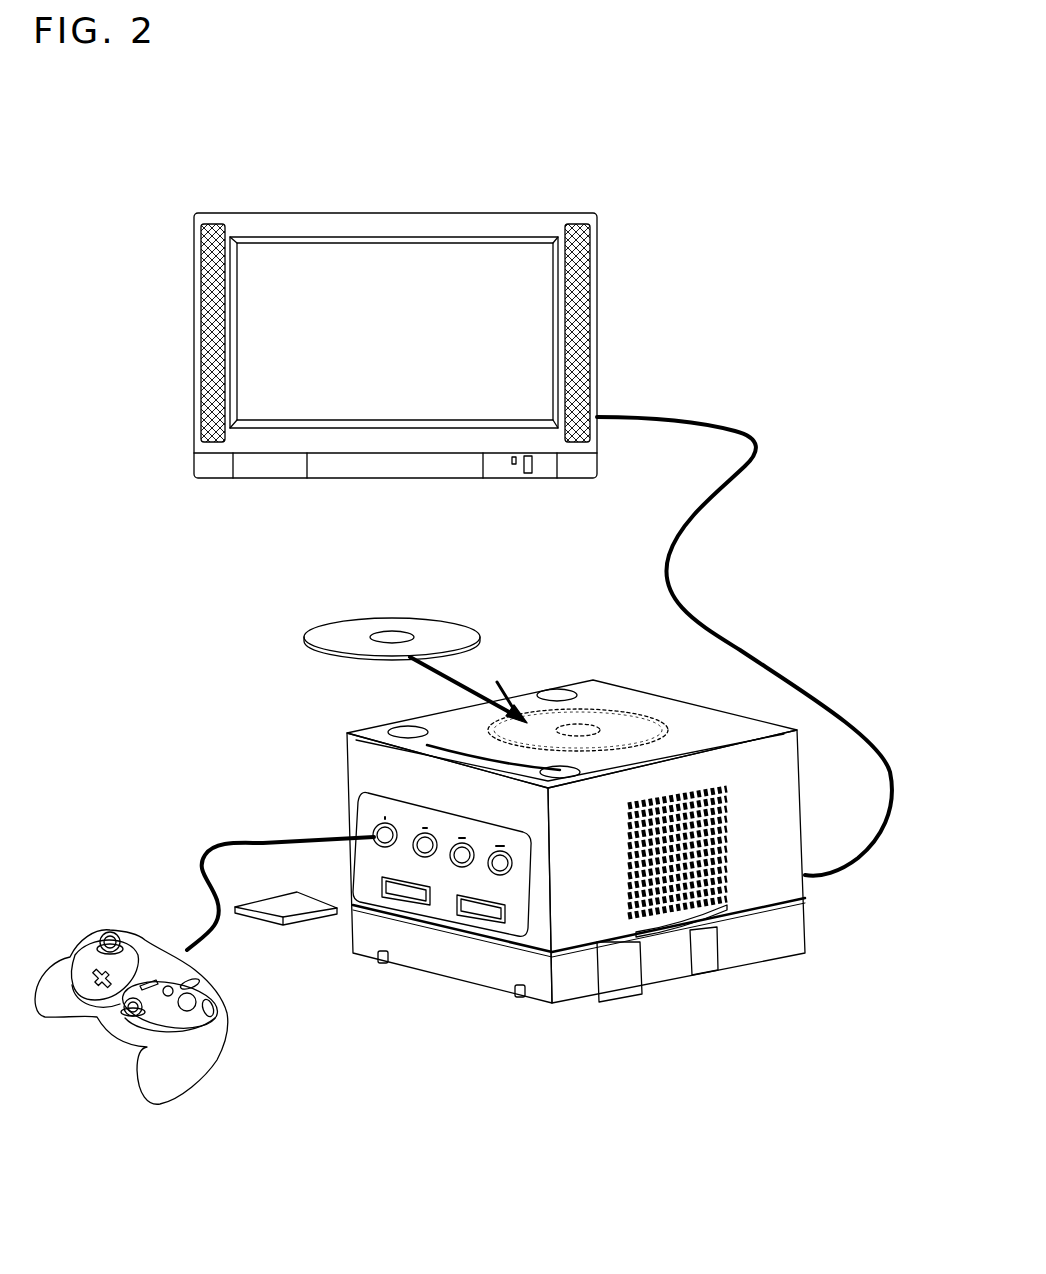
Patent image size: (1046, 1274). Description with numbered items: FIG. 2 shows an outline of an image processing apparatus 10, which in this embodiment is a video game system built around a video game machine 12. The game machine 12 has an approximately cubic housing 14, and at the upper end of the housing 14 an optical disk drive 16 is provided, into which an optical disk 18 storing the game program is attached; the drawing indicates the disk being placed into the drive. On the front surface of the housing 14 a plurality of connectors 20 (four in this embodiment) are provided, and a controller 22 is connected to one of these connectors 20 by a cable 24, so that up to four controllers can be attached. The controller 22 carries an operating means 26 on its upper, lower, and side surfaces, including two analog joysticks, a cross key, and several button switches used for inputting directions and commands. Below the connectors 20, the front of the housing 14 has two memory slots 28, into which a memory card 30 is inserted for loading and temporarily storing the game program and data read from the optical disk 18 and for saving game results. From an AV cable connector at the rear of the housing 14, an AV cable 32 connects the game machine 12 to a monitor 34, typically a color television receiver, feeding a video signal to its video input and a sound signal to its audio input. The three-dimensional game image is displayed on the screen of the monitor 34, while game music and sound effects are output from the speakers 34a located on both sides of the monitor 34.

The image processing apparatus 10 is at (155, 557).
The game machine 12 is at (529, 796).
The housing 14 is at (345, 764).
The optical disk drive 16 is at (615, 718).
The optical disk 18 is at (447, 632).
The connectors 20 is at (376, 834).
The controller 22 is at (135, 981).
The cable 24 is at (207, 855).
The operating means 26 is at (190, 1024).
The memory slot 28 is at (473, 911).
The memory card 30 is at (303, 923).
The AV cable 32 is at (708, 499).
The monitor 34 is at (592, 349).
The speakers 34a is at (210, 282).